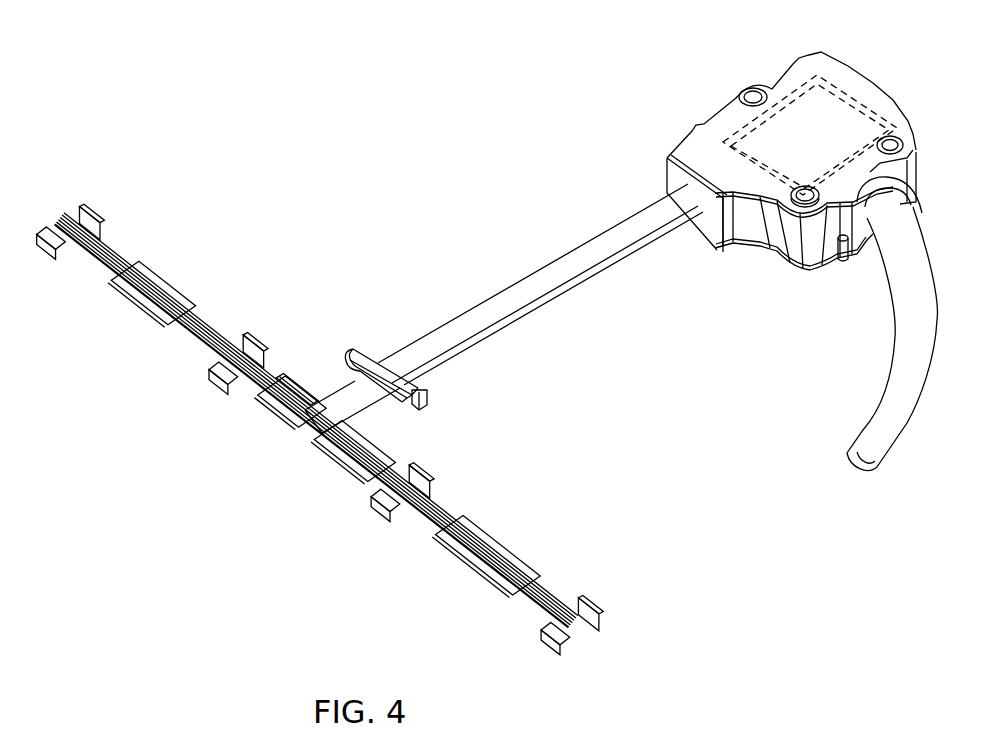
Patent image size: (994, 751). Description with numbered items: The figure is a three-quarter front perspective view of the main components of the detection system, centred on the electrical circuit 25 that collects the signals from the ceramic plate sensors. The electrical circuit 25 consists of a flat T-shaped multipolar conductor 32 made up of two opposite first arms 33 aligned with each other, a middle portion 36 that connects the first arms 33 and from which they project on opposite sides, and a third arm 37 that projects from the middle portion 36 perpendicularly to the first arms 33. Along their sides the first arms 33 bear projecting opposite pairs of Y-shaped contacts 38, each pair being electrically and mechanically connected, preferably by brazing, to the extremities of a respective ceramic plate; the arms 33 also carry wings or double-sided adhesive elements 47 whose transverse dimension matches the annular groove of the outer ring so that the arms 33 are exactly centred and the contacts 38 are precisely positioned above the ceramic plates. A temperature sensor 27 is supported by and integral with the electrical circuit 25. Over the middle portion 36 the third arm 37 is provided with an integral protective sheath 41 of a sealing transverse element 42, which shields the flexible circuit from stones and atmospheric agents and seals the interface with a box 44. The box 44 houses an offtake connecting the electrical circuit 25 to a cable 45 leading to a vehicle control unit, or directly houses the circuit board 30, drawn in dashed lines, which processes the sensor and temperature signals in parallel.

The electrical circuit 25 is at (599, 134).
The temperature sensor 27 is at (315, 434).
The circuit board 30 is at (801, 108).
The flat T-shaped multipolar conductor 32 is at (383, 421).
The first arms 33 is at (192, 340).
The middle portion 36 is at (298, 431).
The third arm 37 is at (343, 382).
The Y-shaped contacts 38 is at (85, 205).
The protective sheath 41 is at (568, 276).
The sealing transverse element 42 is at (378, 350).
The box 44 is at (867, 85).
The cable 45 is at (890, 353).
The wings or double-sided adhesive elements 47 is at (167, 290).